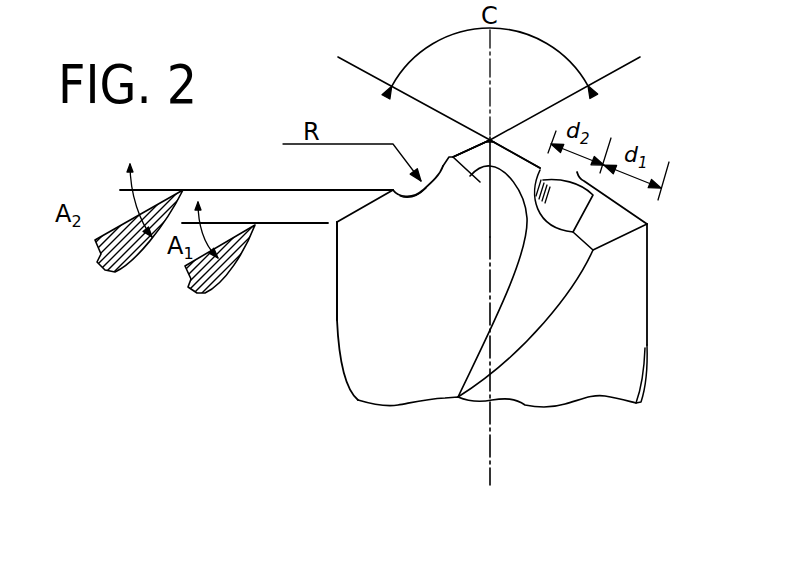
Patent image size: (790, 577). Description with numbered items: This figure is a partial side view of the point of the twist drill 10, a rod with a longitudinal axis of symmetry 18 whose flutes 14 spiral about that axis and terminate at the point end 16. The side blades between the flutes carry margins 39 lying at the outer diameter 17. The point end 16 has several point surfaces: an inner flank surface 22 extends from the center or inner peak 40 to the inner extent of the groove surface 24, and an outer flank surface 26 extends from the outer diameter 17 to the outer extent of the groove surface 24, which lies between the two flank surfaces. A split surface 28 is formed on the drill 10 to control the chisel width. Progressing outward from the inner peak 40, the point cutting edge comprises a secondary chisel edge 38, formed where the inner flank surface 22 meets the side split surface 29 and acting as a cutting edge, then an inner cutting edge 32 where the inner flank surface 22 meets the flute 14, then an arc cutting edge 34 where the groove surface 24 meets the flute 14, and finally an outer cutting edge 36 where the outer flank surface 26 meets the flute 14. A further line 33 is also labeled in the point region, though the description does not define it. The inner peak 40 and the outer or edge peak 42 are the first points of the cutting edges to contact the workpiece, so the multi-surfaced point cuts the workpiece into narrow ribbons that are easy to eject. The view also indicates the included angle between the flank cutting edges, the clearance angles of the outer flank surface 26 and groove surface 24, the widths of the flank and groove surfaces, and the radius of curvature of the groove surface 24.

The twist drill 10 is at (330, 330).
The flute 14 is at (357, 286).
The point end 16 is at (413, 143).
The outer diameter 17 is at (651, 312).
The longitudinal axis of symmetry 18 is at (488, 446).
The inner flank surface 22 is at (506, 156).
The groove surface 24 is at (550, 219).
The outer flank surface 26 is at (632, 214).
The split surface 28 is at (533, 320).
The side split surface 29 is at (489, 141).
The inner cutting edge 32 is at (453, 157).
The side clearance surface 33 is at (492, 281).
The arc cutting edge 34 is at (428, 192).
The outer cutting edge 36 is at (353, 215).
The secondary chisel edge 38 is at (489, 138).
The margin 39 is at (650, 383).
The inner peak 40 is at (490, 138).
The edge peak 42 is at (393, 186).